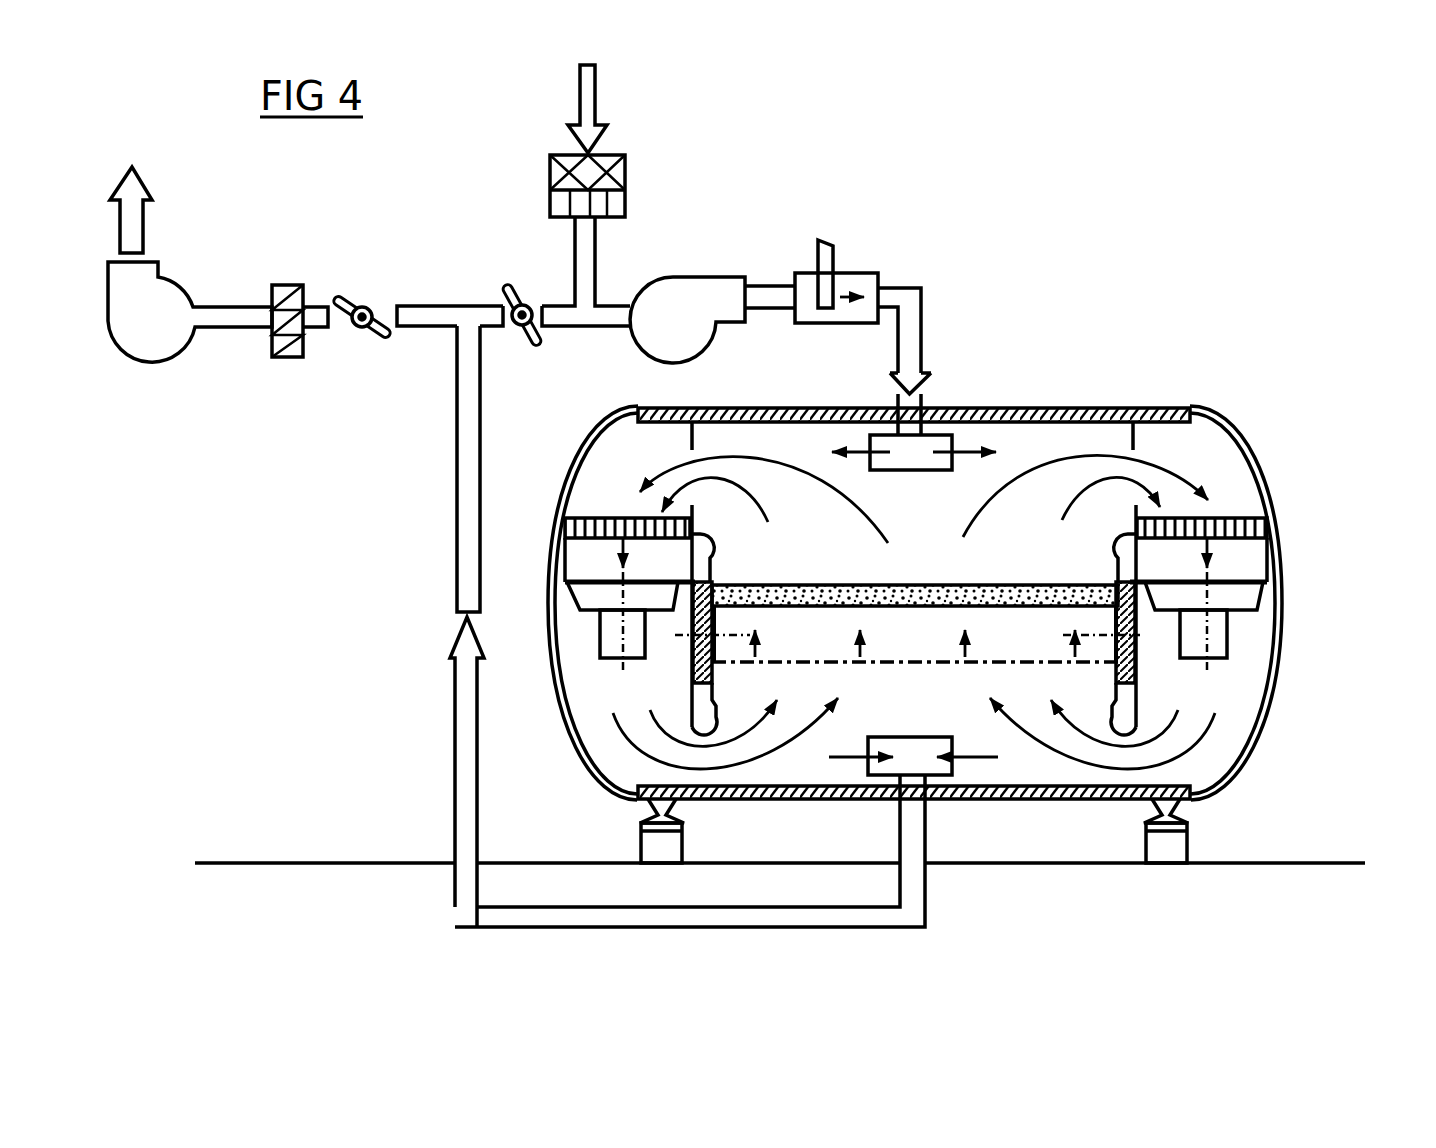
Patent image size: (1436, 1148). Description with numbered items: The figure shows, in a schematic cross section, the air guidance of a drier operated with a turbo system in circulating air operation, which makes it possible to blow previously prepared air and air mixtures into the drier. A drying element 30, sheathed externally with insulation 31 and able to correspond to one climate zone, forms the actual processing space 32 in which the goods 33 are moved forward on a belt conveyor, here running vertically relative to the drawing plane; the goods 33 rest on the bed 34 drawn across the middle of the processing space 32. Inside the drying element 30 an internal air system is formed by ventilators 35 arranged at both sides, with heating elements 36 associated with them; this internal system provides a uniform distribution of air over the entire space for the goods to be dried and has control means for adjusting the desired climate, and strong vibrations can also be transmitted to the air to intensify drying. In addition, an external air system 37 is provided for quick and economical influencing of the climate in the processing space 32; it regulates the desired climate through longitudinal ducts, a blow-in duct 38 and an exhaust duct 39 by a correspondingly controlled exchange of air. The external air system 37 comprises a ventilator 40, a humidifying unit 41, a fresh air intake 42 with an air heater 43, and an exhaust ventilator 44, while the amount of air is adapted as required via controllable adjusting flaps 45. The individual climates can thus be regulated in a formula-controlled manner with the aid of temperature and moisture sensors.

The drying element 30 is at (1156, 308).
The insulation 31 is at (1168, 412).
The processing space 32 is at (950, 565).
The goods 33 is at (742, 594).
The adsorbent bed 34 is at (1000, 587).
The ventilators 35 is at (580, 592).
The heating elements 36 is at (1258, 518).
The external air system 37 is at (460, 447).
The blow-in duct 38 is at (937, 437).
The exhaust duct 39 is at (940, 775).
The ventilator 40 is at (677, 287).
The humidifying unit 41 is at (807, 280).
The fresh air intake 42 is at (588, 105).
The air heater 43 is at (623, 177).
The exhaust ventilator 44 is at (147, 355).
The adjusting flaps 45 is at (360, 328).